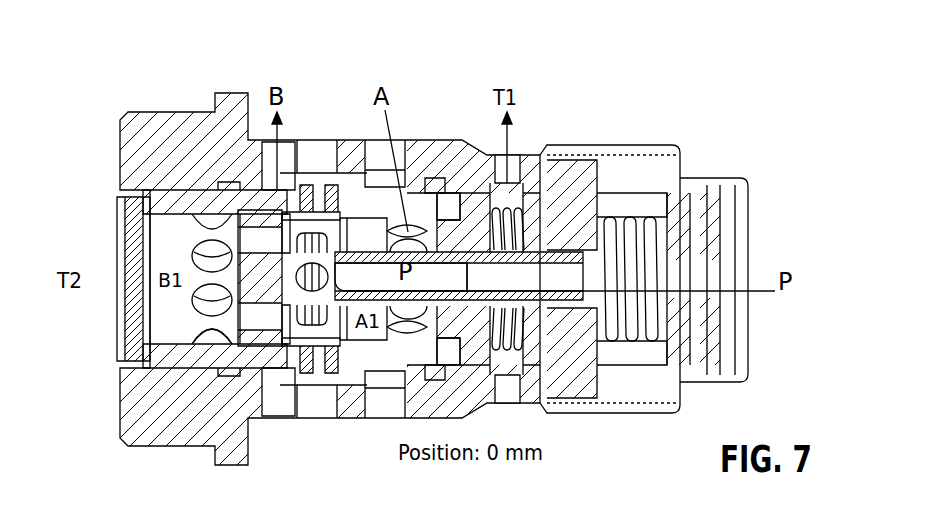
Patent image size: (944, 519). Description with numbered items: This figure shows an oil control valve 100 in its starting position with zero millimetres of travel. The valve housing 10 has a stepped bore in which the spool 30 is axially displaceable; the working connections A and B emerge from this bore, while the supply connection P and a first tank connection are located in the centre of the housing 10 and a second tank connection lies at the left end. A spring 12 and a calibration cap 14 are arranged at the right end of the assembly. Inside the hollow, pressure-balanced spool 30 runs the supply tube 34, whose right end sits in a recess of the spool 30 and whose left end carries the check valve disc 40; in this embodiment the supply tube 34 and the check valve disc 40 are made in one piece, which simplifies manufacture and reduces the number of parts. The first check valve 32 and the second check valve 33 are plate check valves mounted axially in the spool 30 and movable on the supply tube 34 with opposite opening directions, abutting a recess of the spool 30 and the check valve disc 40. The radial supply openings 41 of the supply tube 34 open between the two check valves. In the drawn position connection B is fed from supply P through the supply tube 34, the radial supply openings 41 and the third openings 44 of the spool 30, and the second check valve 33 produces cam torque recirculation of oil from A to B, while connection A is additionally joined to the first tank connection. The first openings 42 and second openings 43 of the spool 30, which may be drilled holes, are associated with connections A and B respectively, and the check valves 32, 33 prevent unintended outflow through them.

The valve housing 10 is at (140, 158).
The spring 12 is at (543, 195).
The calibration cap 14 is at (610, 197).
The spool 30 is at (207, 208).
The first check valve 32 is at (284, 378).
The second check valve 33 is at (387, 327).
The supply tube 34 is at (410, 318).
The check valve disc 40 is at (256, 345).
The radial supply openings 41 is at (331, 185).
The first openings 42 is at (512, 400).
The second openings 43 is at (205, 347).
The third openings 44 is at (320, 235).
The oil control valve 100 is at (788, 172).